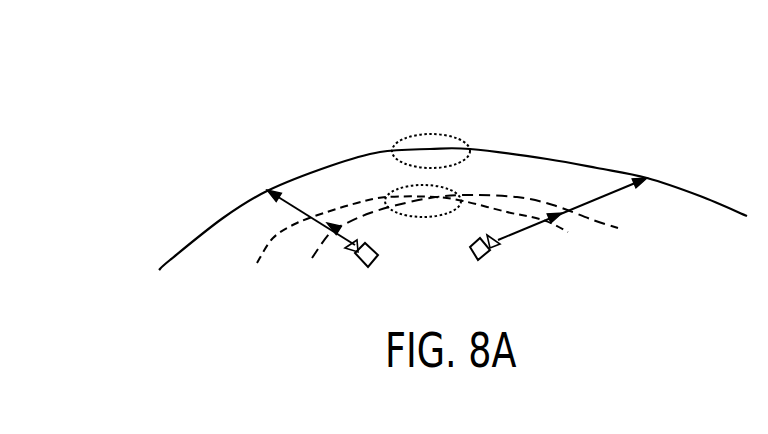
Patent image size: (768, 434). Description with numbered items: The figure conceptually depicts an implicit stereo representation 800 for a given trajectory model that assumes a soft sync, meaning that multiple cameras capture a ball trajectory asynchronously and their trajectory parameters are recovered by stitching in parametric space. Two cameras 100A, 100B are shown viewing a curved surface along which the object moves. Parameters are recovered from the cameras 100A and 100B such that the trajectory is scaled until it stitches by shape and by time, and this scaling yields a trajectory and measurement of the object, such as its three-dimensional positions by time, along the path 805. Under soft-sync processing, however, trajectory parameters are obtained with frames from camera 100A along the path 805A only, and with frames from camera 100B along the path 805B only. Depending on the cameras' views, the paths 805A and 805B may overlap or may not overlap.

The implicit stereo representation 800 is at (288, 138).
The path 805 is at (480, 150).
The path 805A is at (257, 263).
The path 805B is at (516, 199).
The camera 100A is at (360, 264).
The camera 100B is at (482, 254).